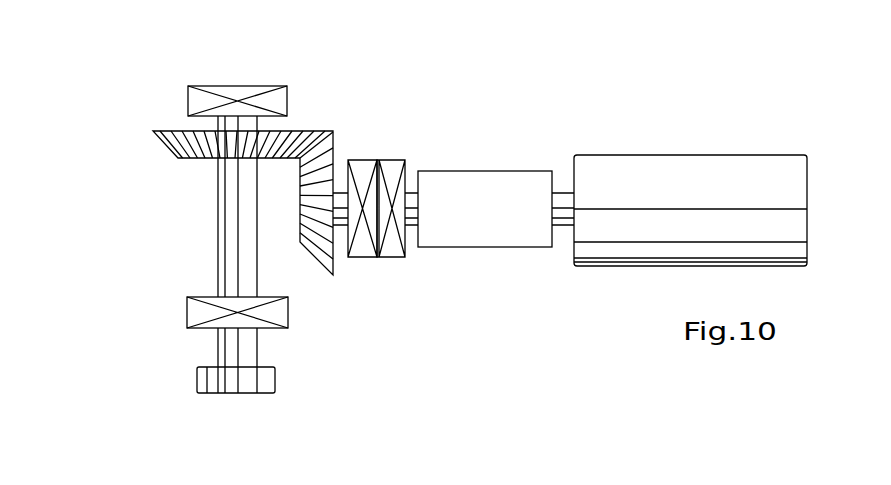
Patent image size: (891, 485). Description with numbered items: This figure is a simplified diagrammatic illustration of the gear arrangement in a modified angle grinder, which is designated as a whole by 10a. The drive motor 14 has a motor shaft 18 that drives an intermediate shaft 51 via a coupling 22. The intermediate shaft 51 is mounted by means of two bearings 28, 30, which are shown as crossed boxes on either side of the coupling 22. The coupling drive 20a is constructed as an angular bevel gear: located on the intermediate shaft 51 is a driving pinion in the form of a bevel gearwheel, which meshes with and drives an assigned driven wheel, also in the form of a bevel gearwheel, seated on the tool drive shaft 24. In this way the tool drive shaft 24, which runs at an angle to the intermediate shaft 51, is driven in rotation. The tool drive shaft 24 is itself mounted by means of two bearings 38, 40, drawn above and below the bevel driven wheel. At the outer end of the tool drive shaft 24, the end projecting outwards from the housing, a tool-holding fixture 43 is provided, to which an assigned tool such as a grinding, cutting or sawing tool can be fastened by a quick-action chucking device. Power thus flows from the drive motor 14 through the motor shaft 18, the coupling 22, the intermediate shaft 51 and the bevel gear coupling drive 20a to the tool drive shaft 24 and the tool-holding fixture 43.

The machine tool 10a is at (502, 102).
The drive motor 14 is at (727, 173).
The motor shaft 18 is at (556, 218).
The coupling drive 20a is at (298, 120).
The coupling 22 is at (485, 228).
The tool drive shaft 24 is at (233, 243).
The bearing 28 is at (390, 173).
The bearing 30 is at (362, 178).
The bearing 38 is at (202, 100).
The bearing 40 is at (197, 315).
The tool-holding fixture 43 is at (253, 380).
The intermediate shaft 51 is at (410, 222).